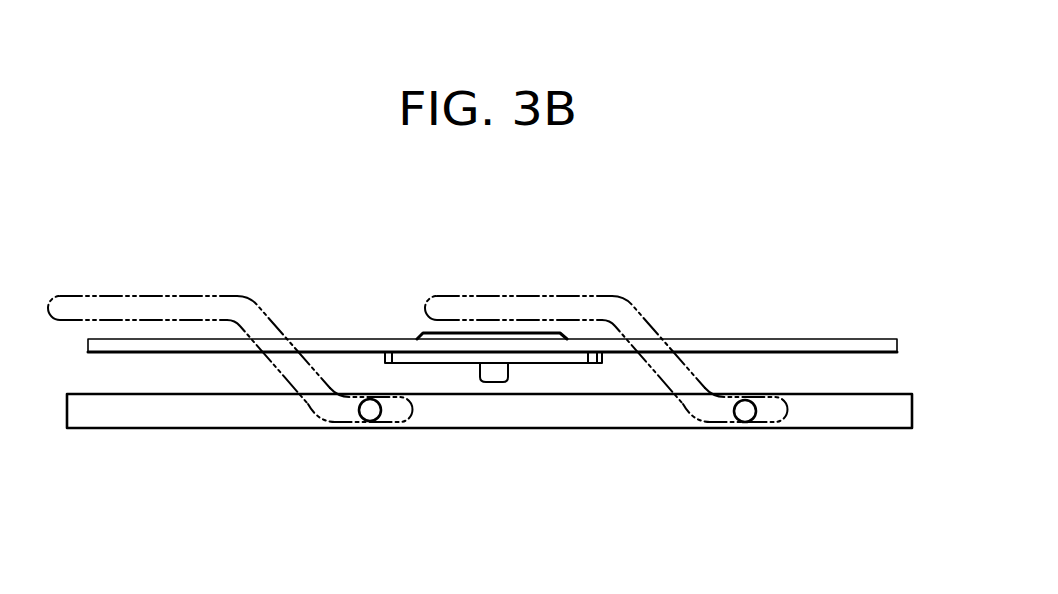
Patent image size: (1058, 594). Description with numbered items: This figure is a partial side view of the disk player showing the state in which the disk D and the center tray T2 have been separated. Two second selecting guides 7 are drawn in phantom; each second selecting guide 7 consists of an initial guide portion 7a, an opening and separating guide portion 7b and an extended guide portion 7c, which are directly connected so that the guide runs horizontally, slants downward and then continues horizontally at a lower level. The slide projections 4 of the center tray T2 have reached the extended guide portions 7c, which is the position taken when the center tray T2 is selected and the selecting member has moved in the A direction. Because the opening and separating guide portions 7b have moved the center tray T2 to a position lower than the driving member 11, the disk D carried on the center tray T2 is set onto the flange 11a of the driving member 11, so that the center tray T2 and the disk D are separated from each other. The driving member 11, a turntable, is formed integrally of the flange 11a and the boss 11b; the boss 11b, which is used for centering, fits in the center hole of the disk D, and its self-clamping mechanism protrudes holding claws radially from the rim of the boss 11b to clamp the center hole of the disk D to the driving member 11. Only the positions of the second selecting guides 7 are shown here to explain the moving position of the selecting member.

The second selecting guide 7 is at (423, 364).
The initial guide portion 7a is at (90, 305).
The opening and separating guide portion 7b is at (285, 368).
The extended guide portion 7c is at (386, 415).
The slide projection 4 is at (370, 398).
The disk D is at (167, 338).
The center tray T2 is at (152, 420).
The driving member 11 is at (592, 385).
The flange 11a is at (550, 362).
The boss 11b is at (475, 333).